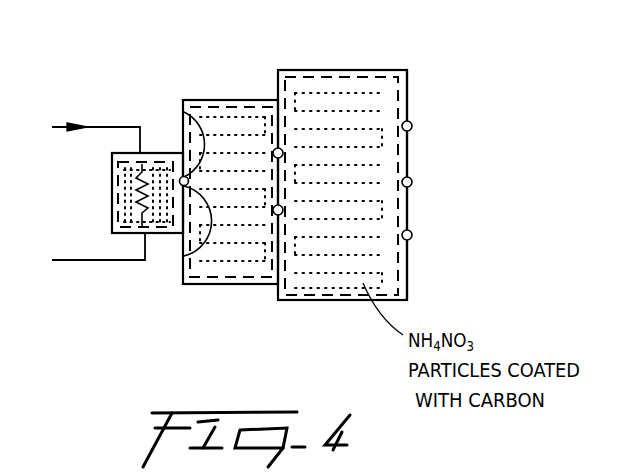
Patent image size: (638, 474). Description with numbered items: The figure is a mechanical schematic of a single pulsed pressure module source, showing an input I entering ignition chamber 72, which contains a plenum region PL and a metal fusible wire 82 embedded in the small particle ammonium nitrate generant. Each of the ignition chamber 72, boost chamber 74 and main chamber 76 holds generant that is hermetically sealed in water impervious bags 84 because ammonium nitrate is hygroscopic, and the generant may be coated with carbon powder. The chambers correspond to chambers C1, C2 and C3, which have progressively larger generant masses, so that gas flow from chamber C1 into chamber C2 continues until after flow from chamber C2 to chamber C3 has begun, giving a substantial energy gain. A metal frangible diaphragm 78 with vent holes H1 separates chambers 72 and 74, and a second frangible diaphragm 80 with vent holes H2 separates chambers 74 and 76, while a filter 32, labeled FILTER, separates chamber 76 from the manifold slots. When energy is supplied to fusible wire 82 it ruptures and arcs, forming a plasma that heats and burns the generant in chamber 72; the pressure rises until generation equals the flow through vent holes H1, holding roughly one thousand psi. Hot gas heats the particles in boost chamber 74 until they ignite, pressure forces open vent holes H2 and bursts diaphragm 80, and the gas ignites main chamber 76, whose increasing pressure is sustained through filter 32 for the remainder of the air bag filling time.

The input gas flow I is at (92, 178).
The ignition chamber 72 is at (112, 158).
The plenum PL is at (123, 193).
The metal fusible wire 82 is at (138, 203).
The water impervious bags 84 is at (163, 240).
The frangible diaphragm 78 is at (184, 112).
The boost chamber 74 is at (205, 115).
The chamber C1 is at (160, 167).
The chamber C2 is at (238, 128).
The chamber C3 is at (338, 95).
The main chamber 76 is at (377, 82).
The filter 32 is at (408, 200).
The vent holes H1 is at (184, 256).
The vent holes H2 is at (275, 214).
The frangible diaphragm 80 is at (280, 247).
The filter FILTER is at (412, 127).